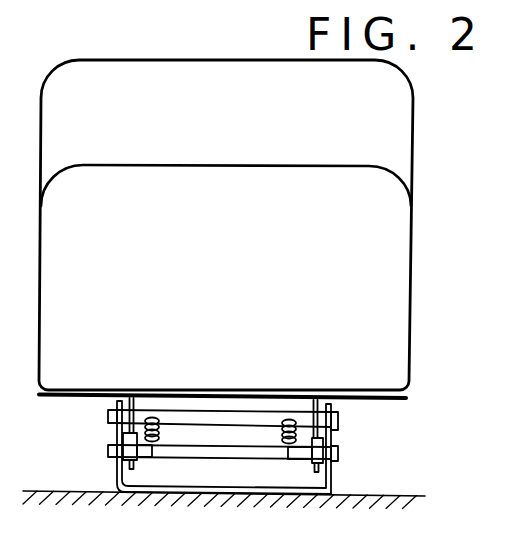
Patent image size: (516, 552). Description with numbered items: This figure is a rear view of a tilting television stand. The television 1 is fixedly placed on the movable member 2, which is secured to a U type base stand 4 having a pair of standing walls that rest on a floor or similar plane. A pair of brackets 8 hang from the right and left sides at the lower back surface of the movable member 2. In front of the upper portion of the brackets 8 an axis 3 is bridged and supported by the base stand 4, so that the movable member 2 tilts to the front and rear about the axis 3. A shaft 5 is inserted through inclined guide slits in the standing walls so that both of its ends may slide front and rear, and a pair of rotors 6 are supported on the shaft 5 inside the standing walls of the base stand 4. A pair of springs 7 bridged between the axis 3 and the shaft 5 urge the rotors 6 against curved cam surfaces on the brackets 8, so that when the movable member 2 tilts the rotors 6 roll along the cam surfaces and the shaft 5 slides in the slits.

The television 1 is at (53, 228).
The movable member 2 is at (393, 400).
The axis 3 is at (108, 418).
The base stand 4 is at (331, 484).
The shaft 5 is at (108, 449).
The rotor 6 is at (135, 456).
The spring 7 is at (152, 420).
The bracket 8 is at (143, 399).